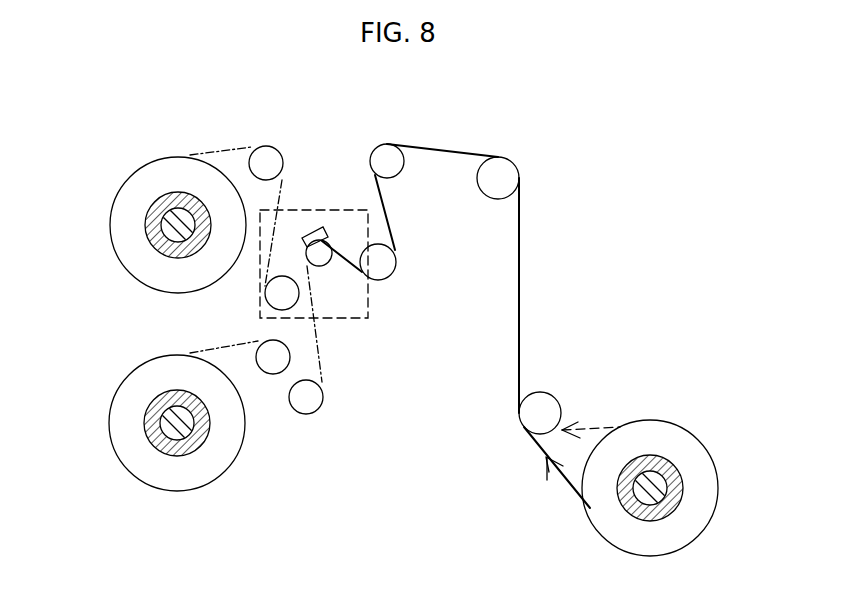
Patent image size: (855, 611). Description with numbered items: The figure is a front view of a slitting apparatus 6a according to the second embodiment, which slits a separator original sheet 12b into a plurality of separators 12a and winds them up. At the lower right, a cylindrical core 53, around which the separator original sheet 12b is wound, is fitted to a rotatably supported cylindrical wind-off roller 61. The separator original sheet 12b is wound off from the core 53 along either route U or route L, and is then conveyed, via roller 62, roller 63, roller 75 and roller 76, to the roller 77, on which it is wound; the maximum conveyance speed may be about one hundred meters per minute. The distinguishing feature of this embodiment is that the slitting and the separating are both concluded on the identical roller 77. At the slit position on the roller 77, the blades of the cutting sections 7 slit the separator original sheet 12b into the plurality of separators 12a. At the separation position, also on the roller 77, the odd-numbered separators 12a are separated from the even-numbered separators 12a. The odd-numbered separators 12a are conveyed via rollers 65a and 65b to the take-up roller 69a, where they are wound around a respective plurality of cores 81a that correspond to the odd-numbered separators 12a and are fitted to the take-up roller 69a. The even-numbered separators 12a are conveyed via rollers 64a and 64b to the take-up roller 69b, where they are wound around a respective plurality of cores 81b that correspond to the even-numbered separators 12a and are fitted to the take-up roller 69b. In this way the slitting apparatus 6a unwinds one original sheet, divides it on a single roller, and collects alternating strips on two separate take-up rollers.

The slitting apparatus 6a is at (688, 137).
The cutting section 7 is at (317, 227).
The separator 12a is at (220, 150).
The separator original sheet 12b is at (519, 270).
The core 53 is at (678, 504).
The wind-off roller 61 is at (639, 496).
The roller 62 is at (537, 399).
The roller 63 is at (510, 168).
The roller 64a is at (308, 399).
The roller 64b is at (273, 362).
The roller 65a is at (271, 297).
The roller 65b is at (270, 156).
The take-up roller 69a is at (163, 245).
The take-up roller 69b is at (163, 444).
The roller 75 is at (383, 152).
The roller 76 is at (388, 268).
The roller 77 is at (323, 249).
The core 81a is at (147, 220).
The core 81b is at (146, 418).
The route U is at (591, 421).
The route L is at (553, 484).